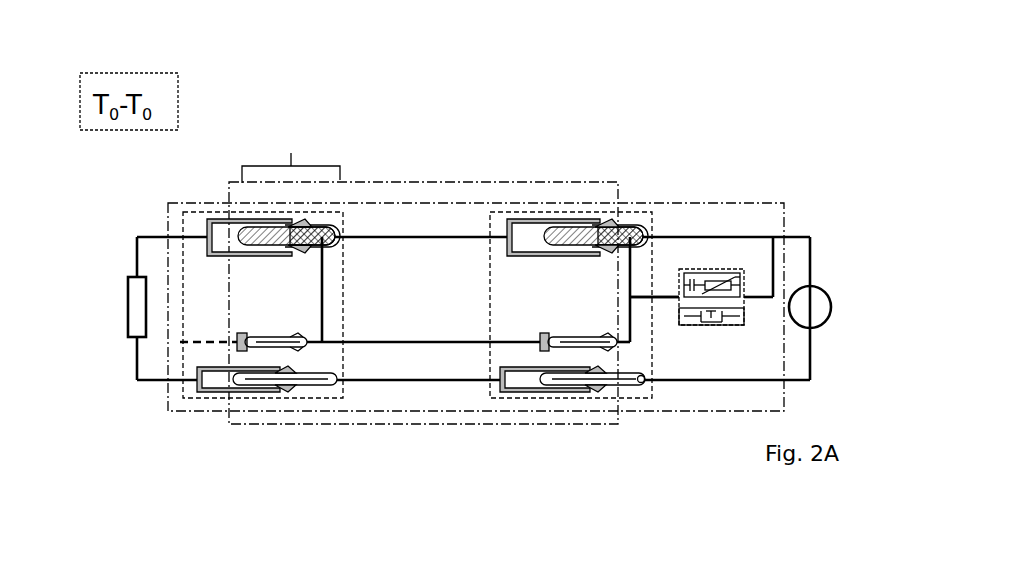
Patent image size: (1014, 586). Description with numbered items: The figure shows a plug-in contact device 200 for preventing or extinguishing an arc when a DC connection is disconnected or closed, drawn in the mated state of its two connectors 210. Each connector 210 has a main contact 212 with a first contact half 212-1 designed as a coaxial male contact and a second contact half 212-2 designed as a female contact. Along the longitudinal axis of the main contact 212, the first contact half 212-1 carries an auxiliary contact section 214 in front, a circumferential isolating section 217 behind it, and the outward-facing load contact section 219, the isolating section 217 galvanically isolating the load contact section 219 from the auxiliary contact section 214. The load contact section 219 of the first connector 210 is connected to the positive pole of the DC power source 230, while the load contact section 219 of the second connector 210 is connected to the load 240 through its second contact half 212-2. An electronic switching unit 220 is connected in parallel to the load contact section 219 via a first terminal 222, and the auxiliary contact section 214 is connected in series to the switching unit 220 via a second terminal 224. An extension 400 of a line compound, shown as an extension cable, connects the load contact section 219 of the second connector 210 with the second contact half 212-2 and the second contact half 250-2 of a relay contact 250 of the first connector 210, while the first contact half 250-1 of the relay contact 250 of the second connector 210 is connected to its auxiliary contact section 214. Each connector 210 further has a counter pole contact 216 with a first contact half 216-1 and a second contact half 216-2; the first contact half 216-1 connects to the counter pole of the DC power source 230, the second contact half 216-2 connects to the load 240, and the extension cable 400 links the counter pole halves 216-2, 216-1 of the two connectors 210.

The plug-in contact device 200 is at (784, 207).
The connector 210 is at (190, 398).
The main contact 212 is at (394, 136).
The first contact half 212-1 is at (291, 153).
The second contact half 212-2 is at (198, 218).
The auxiliary contact section 214 is at (247, 233).
The counter pole contact 216 is at (414, 454).
The first contact half of counter pole contact 216-1 is at (313, 392).
The second contact half of counter pole contact 216-2 is at (240, 393).
The isolating section 217 is at (598, 222).
The load contact section 219 is at (327, 226).
The electronic switching unit 220 is at (737, 235).
The first terminal 222 is at (757, 299).
The second terminal 224 is at (663, 299).
The DC power source 230 is at (832, 307).
The load 240 is at (127, 307).
The relay contact 250 is at (434, 311).
The first contact half of relay contact 250-1 is at (615, 340).
The second contact half of relay contact 250-2 is at (545, 334).
The extension of a line compound 400 is at (420, 425).